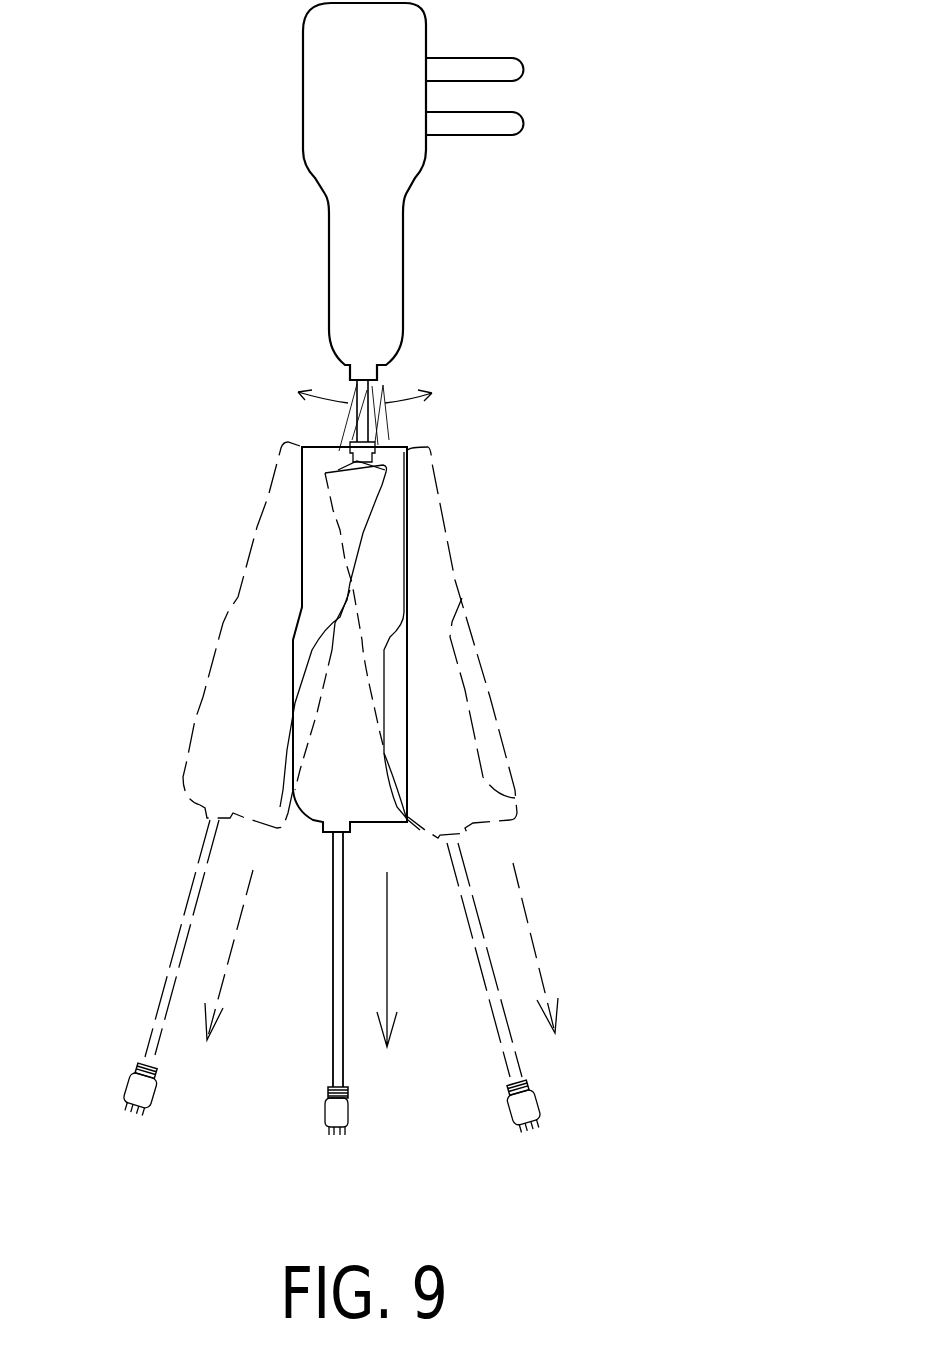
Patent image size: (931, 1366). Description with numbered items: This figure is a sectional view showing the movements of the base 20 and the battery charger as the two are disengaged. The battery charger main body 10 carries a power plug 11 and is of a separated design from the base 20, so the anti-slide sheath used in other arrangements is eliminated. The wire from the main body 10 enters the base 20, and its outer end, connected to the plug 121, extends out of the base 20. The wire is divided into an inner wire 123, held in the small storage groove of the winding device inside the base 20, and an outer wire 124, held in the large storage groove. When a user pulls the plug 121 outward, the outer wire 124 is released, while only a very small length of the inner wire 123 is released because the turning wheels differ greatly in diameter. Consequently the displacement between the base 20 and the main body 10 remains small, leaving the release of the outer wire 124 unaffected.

The battery charger main body 10 is at (352, 57).
The power plug 11 is at (478, 68).
The base 20 is at (397, 538).
The plug 121 is at (330, 1112).
The inner wire 123 is at (357, 430).
The outer wire 124 is at (335, 1028).